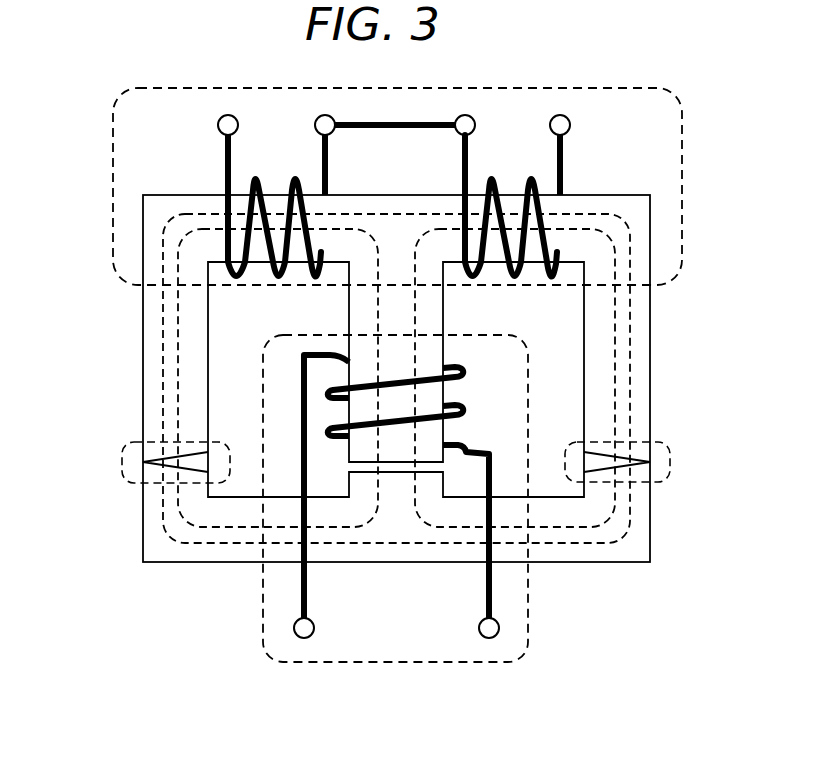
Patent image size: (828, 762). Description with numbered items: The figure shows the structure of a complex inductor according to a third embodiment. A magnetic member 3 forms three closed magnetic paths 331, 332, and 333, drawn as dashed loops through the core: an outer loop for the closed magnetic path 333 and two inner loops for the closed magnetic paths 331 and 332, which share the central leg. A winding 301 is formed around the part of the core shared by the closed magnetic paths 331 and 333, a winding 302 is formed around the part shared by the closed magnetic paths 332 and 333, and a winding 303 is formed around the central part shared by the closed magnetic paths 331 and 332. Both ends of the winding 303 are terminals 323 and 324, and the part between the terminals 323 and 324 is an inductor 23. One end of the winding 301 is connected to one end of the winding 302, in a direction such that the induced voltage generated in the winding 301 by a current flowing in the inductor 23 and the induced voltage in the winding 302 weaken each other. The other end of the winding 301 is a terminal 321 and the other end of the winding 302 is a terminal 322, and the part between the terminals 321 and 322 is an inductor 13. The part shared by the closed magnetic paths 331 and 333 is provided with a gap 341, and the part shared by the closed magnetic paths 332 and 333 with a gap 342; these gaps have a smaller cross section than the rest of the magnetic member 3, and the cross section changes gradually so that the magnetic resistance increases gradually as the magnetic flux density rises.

The magnetic member 3 is at (170, 563).
The inductor 13 is at (116, 162).
The inductor 23 is at (530, 602).
The winding 301 is at (493, 188).
The winding 302 is at (258, 188).
The winding 303 is at (463, 401).
The terminal 321 is at (572, 124).
The terminal 322 is at (218, 125).
The terminal 323 is at (478, 630).
The terminal 324 is at (314, 630).
The closed magnetic path 331 is at (433, 232).
The closed magnetic path 332 is at (376, 532).
The closed magnetic path 333 is at (166, 362).
The gap 341 is at (655, 444).
The gap 342 is at (124, 445).